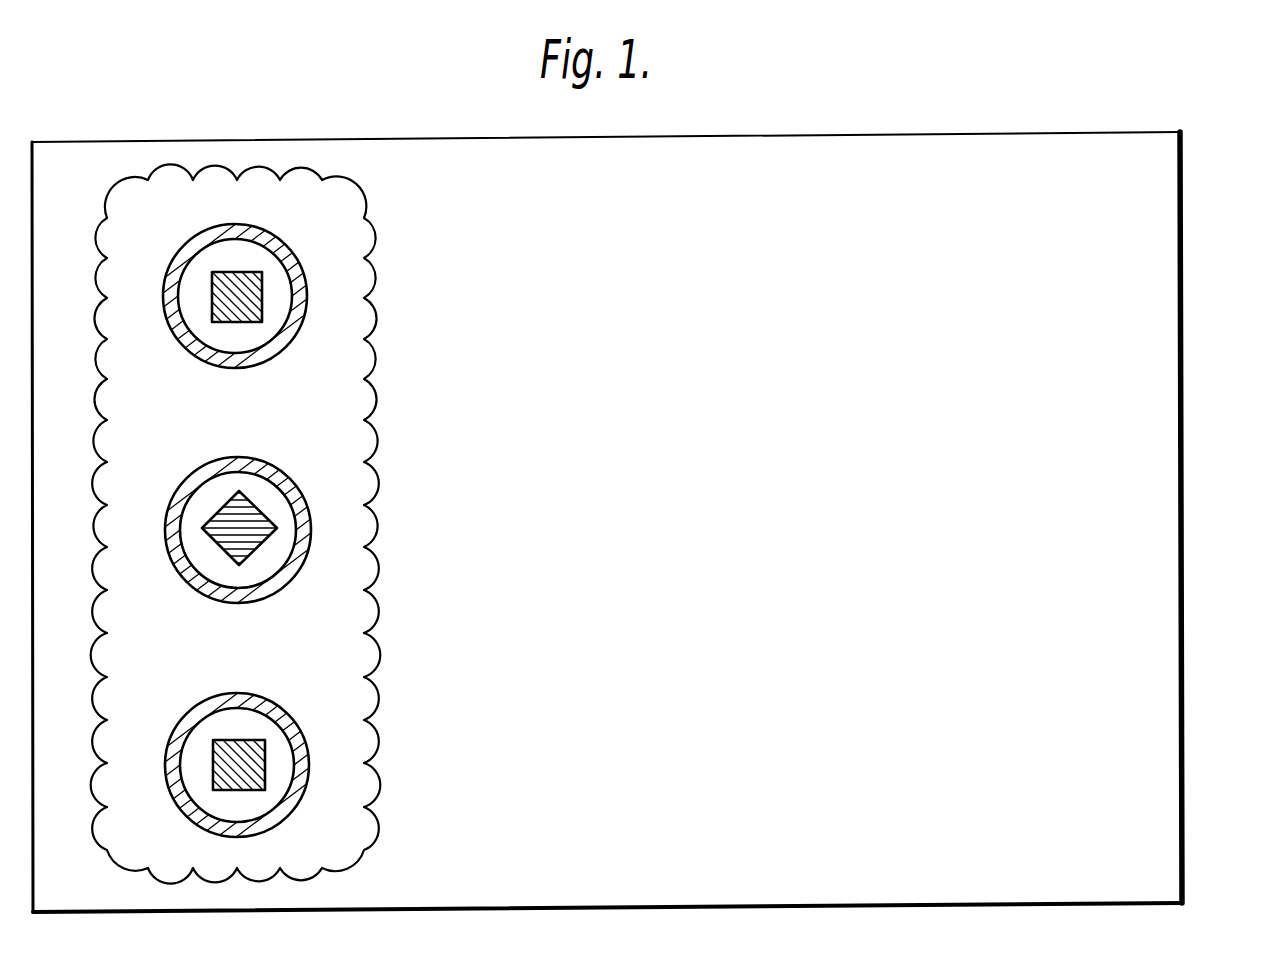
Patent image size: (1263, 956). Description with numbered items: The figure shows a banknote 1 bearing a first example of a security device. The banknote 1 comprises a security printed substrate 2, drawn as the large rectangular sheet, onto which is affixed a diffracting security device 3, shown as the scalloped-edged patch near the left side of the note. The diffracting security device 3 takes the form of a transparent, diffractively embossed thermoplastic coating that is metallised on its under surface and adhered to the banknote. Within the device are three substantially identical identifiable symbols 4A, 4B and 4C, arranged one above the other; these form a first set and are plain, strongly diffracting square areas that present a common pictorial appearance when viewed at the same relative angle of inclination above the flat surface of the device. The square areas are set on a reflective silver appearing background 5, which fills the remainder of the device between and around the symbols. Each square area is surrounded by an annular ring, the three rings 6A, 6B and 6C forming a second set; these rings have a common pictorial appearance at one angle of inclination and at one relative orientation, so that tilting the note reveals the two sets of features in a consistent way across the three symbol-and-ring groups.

The banknote 1 is at (1182, 228).
The security printed substrate 2 is at (1157, 373).
The diffracting security device 3 is at (377, 232).
The identifiable symbol 4A is at (248, 292).
The identifiable symbol 4B is at (260, 521).
The identifiable symbol 4C is at (243, 763).
The reflective silver appearing background 5 is at (223, 332).
The annular ring 6A is at (297, 323).
The annular ring 6B is at (298, 565).
The annular ring 6C is at (298, 792).